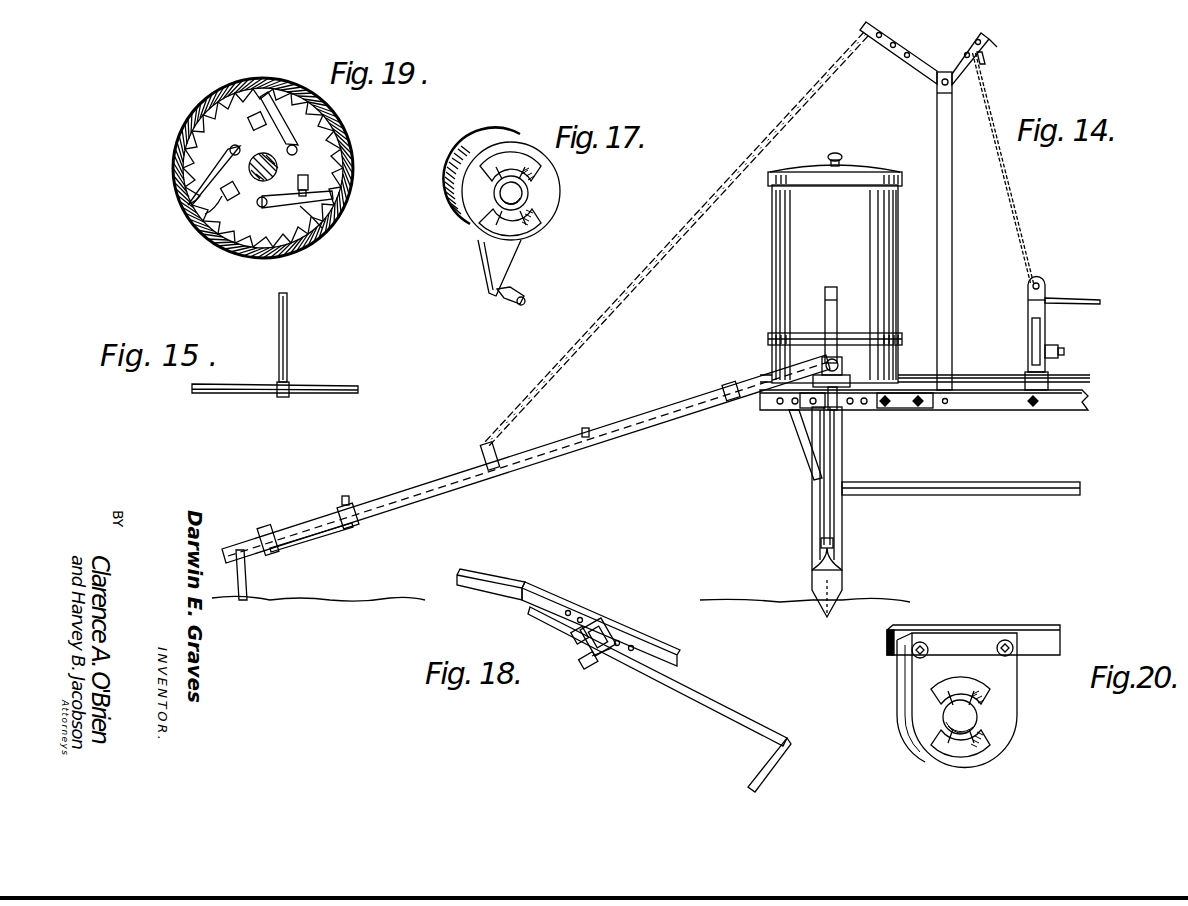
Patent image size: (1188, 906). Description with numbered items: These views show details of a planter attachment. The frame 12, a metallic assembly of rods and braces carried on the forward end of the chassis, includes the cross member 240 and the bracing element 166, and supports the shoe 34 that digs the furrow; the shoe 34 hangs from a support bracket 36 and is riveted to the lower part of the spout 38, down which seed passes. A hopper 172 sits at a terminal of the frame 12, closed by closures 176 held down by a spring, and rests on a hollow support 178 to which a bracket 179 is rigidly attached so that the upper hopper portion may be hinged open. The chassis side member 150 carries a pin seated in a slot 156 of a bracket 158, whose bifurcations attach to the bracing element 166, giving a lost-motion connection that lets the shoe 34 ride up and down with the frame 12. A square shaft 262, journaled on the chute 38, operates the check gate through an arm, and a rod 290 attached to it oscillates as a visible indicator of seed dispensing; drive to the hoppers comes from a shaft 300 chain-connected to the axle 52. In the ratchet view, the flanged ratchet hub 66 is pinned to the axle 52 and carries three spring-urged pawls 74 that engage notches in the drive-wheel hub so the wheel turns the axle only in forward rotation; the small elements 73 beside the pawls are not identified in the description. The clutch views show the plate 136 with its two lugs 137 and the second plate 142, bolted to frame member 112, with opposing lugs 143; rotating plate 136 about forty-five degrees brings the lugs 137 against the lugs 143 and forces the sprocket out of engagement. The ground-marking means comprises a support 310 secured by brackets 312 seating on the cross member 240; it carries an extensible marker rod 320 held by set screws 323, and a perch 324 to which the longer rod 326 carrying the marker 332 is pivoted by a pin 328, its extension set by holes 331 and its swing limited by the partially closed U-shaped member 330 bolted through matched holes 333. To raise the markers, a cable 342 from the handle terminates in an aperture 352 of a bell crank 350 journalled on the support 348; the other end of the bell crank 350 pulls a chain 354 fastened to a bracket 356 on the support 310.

In FIG. 14, the frame 12 is at (1013, 423).
In FIG. 14, the shoe 34 is at (843, 577).
In FIG. 14, the support bracket 36 is at (845, 505).
In FIG. 14, the spout 38 is at (800, 445).
In FIG. 19, the axle 52 is at (278, 165).
In FIG. 19, the flanged ratchet hub 66 is at (345, 188).
In FIG. 19, the pawl blocks 73 is at (250, 110).
In FIG. 19, the ratchet pawl 74 is at (292, 110).
In FIG. 20, the frame member 112 is at (1036, 637).
In FIG. 17, the plate 136 is at (550, 205).
In FIG. 17, the lugs 137 is at (525, 164).
In FIG. 20, the second plate 142 is at (1010, 722).
In FIG. 20, the lugs 143 is at (990, 690).
In FIG. 14, the side member 150 is at (1046, 340).
In FIG. 14, the slot 156 is at (1032, 336).
In FIG. 14, the bracket 158 is at (1028, 318).
In FIG. 14, the bracing element 166 is at (1052, 411).
In FIG. 14, the hopper 172 is at (775, 262).
In FIG. 14, the closures 176 is at (860, 171).
In FIG. 14, the hollow support 178 is at (768, 350).
In FIG. 14, the bracket 179 is at (825, 325).
In FIG. 14, the cross member 240 is at (842, 420).
In FIG. 15, the shaft 262 is at (292, 394).
In FIG. 15, the rod 290 is at (288, 340).
In FIG. 14, the shaft 300 is at (1072, 375).
In FIG. 14, the support 310 is at (740, 405).
In FIG. 14, the brackets 312 is at (836, 358).
In FIG. 14, the rod 320 is at (428, 498).
In FIG. 14, the set screws 323 is at (588, 432).
In FIG. 14, the perch 324 is at (342, 508).
In FIG. 18, the perch 324 is at (525, 590).
In FIG. 14, the arm 326 is at (318, 542).
In FIG. 18, the arm 326 is at (745, 717).
In FIG. 18, the pin 328 is at (572, 620).
In FIG. 14, the U-shaped member 330 is at (272, 528).
In FIG. 18, the U-shaped member 330 is at (606, 628).
In FIG. 18, the holes 331 is at (560, 622).
In FIG. 14, the marker 332 is at (247, 580).
In FIG. 18, the marker 332 is at (782, 762).
In FIG. 18, the matched holes 333 is at (610, 650).
In FIG. 14, the cable 342 is at (1080, 299).
In FIG. 14, the support 348 is at (948, 250).
In FIG. 14, the bell crank 350 is at (912, 60).
In FIG. 14, the aperture 352 is at (995, 47).
In FIG. 14, the chain 354 is at (830, 88).
In FIG. 14, the bracket 356 is at (502, 452).